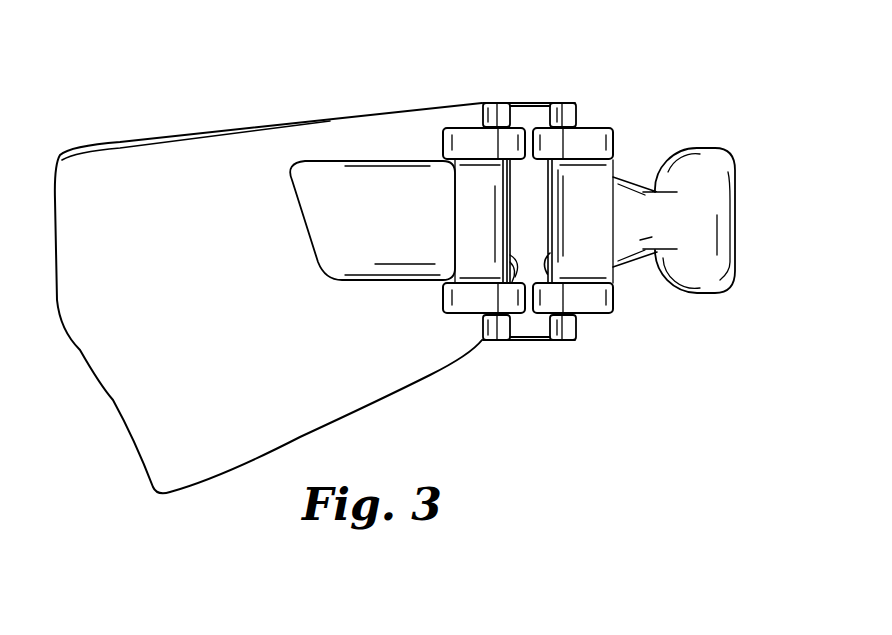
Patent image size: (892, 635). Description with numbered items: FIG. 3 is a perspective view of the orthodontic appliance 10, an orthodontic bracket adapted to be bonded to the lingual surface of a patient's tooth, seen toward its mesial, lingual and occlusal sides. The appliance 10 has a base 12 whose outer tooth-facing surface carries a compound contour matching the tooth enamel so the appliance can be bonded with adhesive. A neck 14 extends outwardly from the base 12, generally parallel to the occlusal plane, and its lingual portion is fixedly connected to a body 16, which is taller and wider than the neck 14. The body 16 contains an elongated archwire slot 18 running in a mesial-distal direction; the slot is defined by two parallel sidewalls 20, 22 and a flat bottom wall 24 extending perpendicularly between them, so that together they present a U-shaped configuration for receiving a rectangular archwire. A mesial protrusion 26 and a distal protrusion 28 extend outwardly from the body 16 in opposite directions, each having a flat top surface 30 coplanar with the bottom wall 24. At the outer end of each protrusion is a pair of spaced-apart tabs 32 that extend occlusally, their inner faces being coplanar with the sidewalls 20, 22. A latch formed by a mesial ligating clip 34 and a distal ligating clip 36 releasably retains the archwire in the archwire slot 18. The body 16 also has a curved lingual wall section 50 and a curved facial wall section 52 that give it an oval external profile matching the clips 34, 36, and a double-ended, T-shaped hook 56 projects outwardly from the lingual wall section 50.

The orthodontic appliance 10 is at (286, 48).
The base 12 is at (166, 162).
The neck 14 is at (333, 173).
The body 16 is at (620, 163).
The archwire slot 18 is at (522, 172).
The sidewall 20 is at (513, 258).
The sidewall 22 is at (550, 254).
The bottom wall 24 is at (527, 221).
The mesial protrusion 26 is at (546, 345).
The distal protrusion 28 is at (520, 102).
The top surface 30 is at (527, 333).
The tab 32 is at (565, 115).
The mesial ligating clip 34 is at (620, 309).
The distal ligating clip 36 is at (608, 124).
The lingual wall section 50 is at (660, 191).
The facial wall section 52 is at (462, 193).
The hook 56 is at (710, 203).